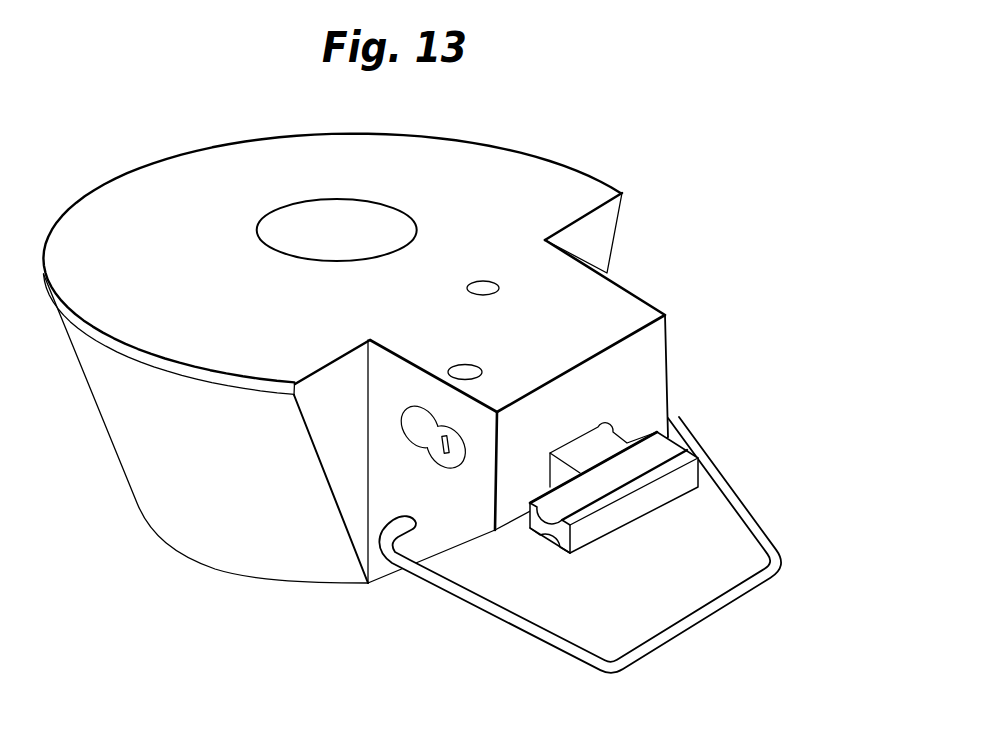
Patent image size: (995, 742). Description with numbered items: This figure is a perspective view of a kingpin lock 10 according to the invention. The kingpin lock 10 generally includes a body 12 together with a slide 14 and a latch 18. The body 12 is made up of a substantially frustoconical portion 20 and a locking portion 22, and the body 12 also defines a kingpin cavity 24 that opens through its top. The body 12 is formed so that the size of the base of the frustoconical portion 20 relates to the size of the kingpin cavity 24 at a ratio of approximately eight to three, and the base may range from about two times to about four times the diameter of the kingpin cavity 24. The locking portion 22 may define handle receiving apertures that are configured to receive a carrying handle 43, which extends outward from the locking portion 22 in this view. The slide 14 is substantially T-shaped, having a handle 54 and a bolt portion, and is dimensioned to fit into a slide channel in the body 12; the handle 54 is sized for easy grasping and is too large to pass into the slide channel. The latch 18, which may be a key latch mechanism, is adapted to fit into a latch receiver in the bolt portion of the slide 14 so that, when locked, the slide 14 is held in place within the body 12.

The kingpin lock 10 is at (590, 128).
The body 12 is at (610, 184).
The slide 14 is at (687, 455).
The latch 18 is at (437, 438).
The frustoconical portion 20 is at (199, 565).
The locking portion 22 is at (673, 337).
The kingpin cavity 24 is at (318, 212).
The carrying handle 43 is at (583, 665).
The handle 54 is at (633, 512).